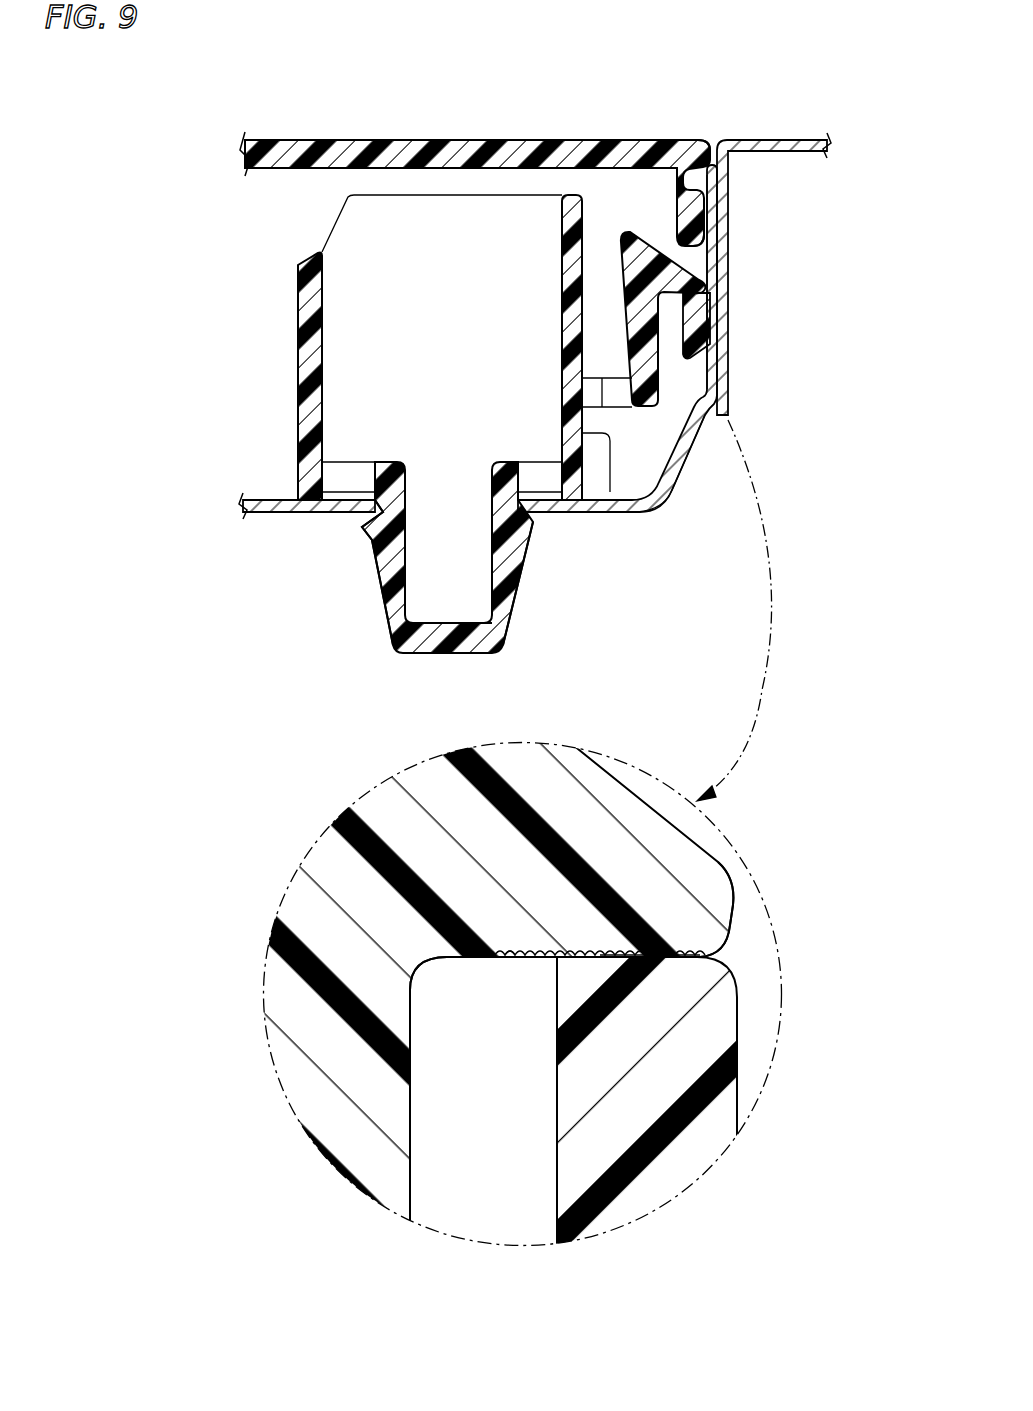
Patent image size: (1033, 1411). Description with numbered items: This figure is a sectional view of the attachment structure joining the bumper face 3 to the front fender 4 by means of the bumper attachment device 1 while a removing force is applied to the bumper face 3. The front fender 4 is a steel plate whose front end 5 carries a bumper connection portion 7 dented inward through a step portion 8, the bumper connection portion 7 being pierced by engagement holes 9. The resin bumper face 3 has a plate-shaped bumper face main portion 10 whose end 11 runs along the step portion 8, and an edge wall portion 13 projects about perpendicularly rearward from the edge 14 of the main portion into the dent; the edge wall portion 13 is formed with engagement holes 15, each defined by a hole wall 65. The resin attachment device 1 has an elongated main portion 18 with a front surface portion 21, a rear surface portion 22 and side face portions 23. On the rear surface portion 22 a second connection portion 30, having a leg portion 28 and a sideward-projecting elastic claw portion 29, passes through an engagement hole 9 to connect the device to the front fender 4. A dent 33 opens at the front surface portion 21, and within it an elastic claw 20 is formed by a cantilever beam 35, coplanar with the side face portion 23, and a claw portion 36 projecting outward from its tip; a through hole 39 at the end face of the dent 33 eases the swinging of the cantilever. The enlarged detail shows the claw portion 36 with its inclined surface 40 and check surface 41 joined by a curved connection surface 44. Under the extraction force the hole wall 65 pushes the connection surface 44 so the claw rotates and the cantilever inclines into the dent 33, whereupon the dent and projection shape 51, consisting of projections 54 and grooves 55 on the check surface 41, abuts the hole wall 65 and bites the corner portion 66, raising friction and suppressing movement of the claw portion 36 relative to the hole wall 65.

The bumper attachment device 1 is at (493, 428).
The bumper face 3 is at (335, 126).
The front fender 4 is at (517, 371).
The front end 5 is at (773, 138).
The bumper connection portion 7 is at (290, 512).
The step portion 8 is at (718, 302).
The engagement hole 9 is at (380, 512).
The bumper face main portion 10 is at (374, 150).
The end 11 is at (522, 150).
The edge wall portion 13 is at (680, 207).
The edge 14 is at (705, 150).
The engagement hole 15 is at (703, 247).
The main portion 18 is at (297, 376).
The elastic claw 20 is at (736, 319).
The front surface portion 21 is at (362, 195).
The rear surface portion 22 is at (547, 500).
The side face portion 23 is at (303, 300).
The leg portion 28 is at (450, 650).
The claw portion 29 is at (400, 575).
The second connection portion 30 is at (533, 568).
The dent 33 is at (658, 492).
The beam 35 is at (642, 378).
The claw portion 36 is at (700, 322).
The through hole 39 is at (680, 437).
The inclined surface 40 is at (715, 850).
The check surface 41 is at (470, 963).
The connection surface 44 is at (740, 953).
The dent and projection shape 51 is at (585, 1015).
The projection 54 is at (500, 960).
The groove 55 is at (513, 960).
The hole wall 65 is at (612, 946).
The corner portion 66 is at (529, 980).